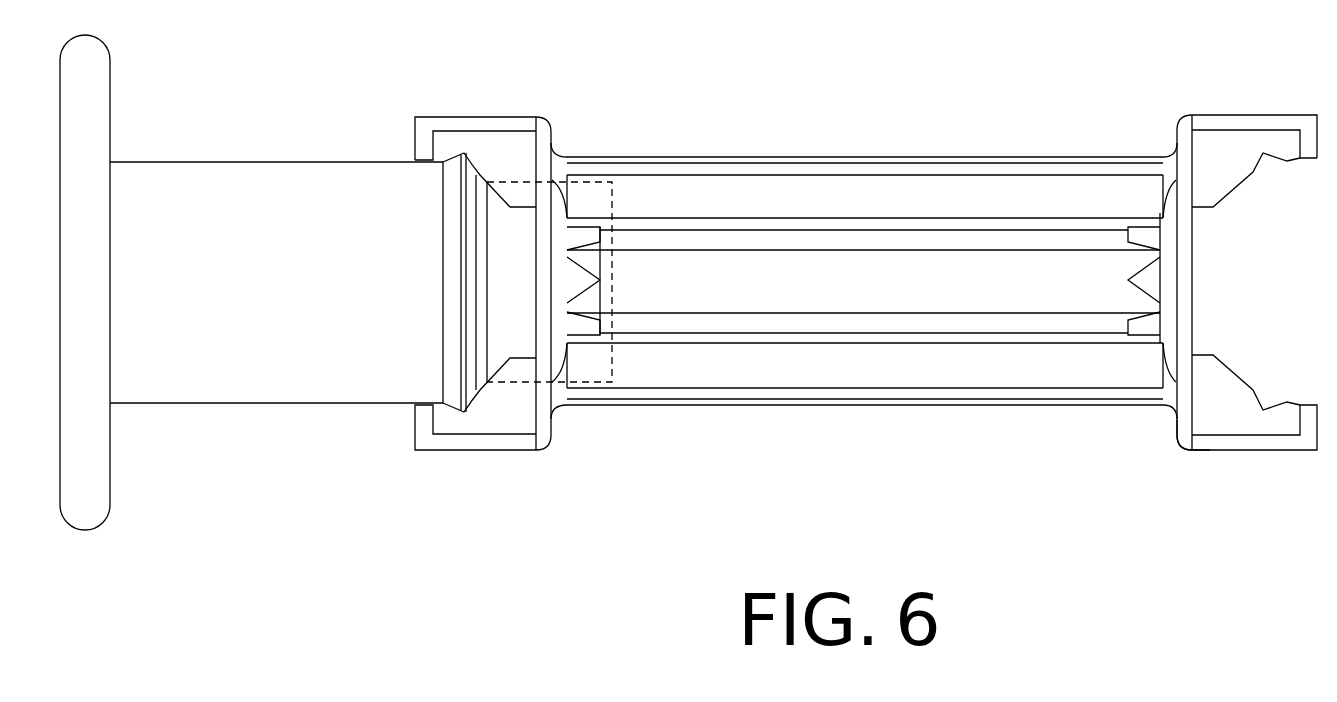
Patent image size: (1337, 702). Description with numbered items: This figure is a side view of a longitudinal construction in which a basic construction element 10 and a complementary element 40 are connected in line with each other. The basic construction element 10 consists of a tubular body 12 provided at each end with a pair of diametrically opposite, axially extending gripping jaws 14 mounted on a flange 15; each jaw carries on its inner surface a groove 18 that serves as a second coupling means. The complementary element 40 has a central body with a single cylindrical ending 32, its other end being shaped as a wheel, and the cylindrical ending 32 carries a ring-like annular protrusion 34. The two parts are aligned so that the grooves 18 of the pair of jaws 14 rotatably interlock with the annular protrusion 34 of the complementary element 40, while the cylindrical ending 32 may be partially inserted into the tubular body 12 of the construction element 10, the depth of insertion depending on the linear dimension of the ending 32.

The basic construction element 10 is at (882, 140).
The tubular body portion 12 is at (955, 195).
The gripping jaws 14 is at (487, 143).
The flange 15 is at (1177, 450).
The groove 18 is at (462, 418).
The cylindrical ending 32 is at (505, 292).
The annular protrusion 34 is at (452, 333).
The complementary element 40 is at (245, 152).